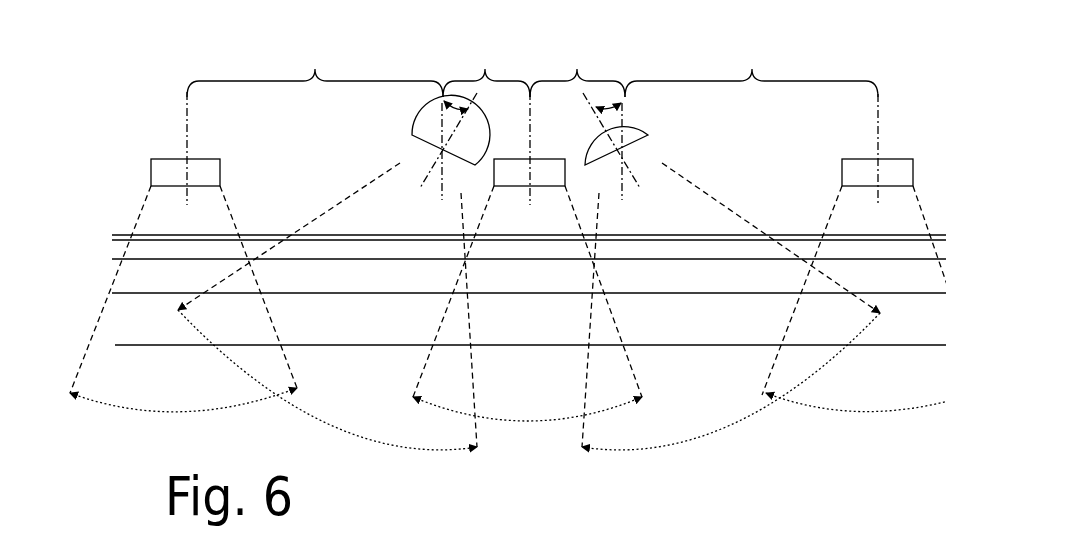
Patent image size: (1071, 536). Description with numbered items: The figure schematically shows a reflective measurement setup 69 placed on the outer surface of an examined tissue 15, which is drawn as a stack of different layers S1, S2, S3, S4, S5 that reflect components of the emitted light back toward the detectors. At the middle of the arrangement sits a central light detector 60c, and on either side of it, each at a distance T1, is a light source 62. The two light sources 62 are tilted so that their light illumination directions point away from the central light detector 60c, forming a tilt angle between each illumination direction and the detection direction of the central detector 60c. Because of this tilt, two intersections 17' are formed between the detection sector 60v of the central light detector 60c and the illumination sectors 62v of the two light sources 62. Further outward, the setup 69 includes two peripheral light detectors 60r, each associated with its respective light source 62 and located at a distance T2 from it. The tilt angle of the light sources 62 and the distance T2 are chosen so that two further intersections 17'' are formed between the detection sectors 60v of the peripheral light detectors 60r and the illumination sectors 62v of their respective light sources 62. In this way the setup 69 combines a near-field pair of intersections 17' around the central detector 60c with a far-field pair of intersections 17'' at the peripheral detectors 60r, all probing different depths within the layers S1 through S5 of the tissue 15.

The reflective measurement setup 69 is at (133, 43).
The examined tissue 15 is at (172, 233).
The peripheral light detector 60r is at (168, 159).
The central light detector 60c is at (507, 159).
The light source 62 is at (402, 162).
The detection sector 60v is at (531, 422).
The illumination sector 62v is at (529, 381).
The intersection 17' is at (531, 470).
The intersection 17'' is at (526, 444).
The tissue layer S1 is at (158, 238).
The tissue layer S2 is at (152, 252).
The tissue layer S3 is at (150, 278).
The tissue layer S4 is at (148, 322).
The tissue layer S5 is at (150, 377).
The distance T1 is at (534, 67).
The distance T2 is at (532, 67).